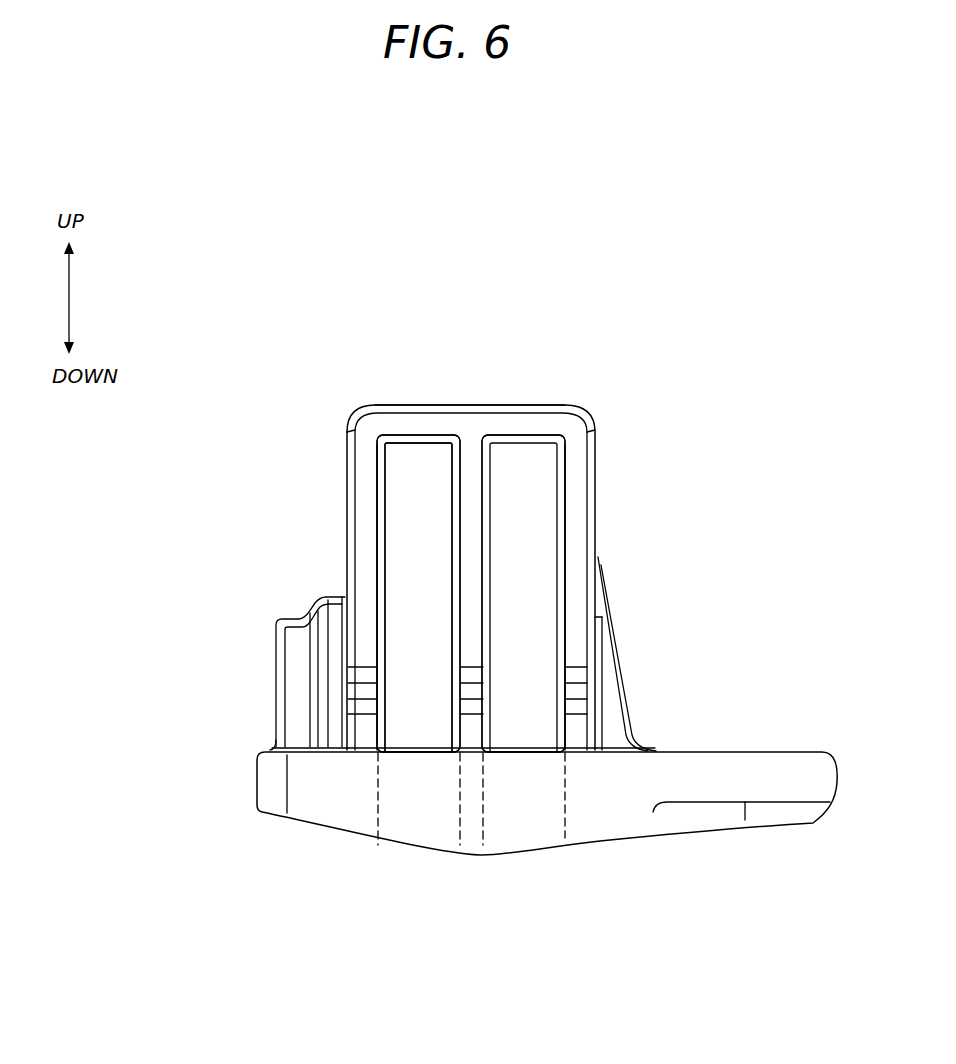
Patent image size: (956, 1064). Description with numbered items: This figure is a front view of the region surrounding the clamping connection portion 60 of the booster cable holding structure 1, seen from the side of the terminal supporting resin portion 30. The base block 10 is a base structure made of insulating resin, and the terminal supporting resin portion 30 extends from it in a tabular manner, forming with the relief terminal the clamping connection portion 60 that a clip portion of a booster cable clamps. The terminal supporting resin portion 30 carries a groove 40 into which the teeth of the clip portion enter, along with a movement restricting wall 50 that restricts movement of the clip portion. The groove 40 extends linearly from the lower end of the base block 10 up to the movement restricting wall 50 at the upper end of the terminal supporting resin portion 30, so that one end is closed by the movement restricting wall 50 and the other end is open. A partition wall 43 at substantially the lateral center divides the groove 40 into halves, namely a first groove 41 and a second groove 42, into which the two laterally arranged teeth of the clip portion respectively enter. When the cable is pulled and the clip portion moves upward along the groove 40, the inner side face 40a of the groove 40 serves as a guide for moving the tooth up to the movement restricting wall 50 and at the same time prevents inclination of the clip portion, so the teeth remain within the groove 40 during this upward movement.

The booster cable holding structure 1 is at (467, 280).
The base block 10 is at (684, 750).
The terminal supporting resin portion 30 is at (545, 386).
The groove 40 is at (410, 496).
The inner side face 40a is at (380, 527).
The first groove 41 is at (420, 669).
The second groove 42 is at (525, 685).
The partition wall 43 is at (468, 517).
The movement restricting wall 50 is at (427, 427).
The clamping connection portion 60 is at (477, 395).